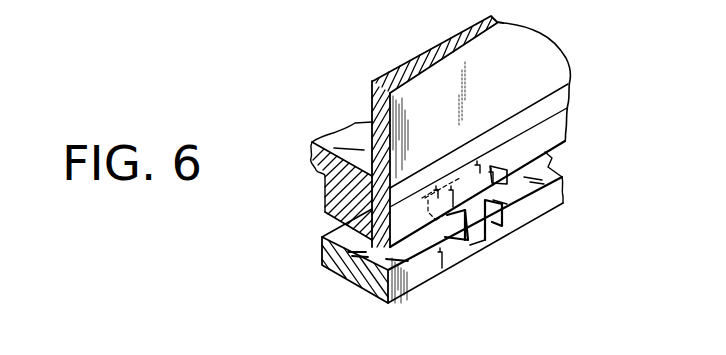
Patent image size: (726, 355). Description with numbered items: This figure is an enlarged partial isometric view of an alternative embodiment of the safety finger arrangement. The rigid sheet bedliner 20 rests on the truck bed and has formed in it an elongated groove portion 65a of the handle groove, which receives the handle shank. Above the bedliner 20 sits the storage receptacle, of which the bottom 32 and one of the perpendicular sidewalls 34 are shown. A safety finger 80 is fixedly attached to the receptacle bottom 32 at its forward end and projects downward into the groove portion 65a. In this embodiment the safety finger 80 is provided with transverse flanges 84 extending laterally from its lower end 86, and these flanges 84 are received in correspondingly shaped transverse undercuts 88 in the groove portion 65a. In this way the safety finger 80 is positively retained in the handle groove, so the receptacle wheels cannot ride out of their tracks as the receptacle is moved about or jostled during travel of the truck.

The bedliner 20 is at (548, 168).
The bottom of the receptacle 32 is at (355, 124).
The sidewalls 34 is at (552, 60).
The elongated groove portion 65a is at (370, 278).
The safety finger 80 is at (494, 203).
The transverse flanges 84 is at (490, 237).
The lower end 86 is at (483, 247).
The transverse undercuts 88 is at (506, 232).